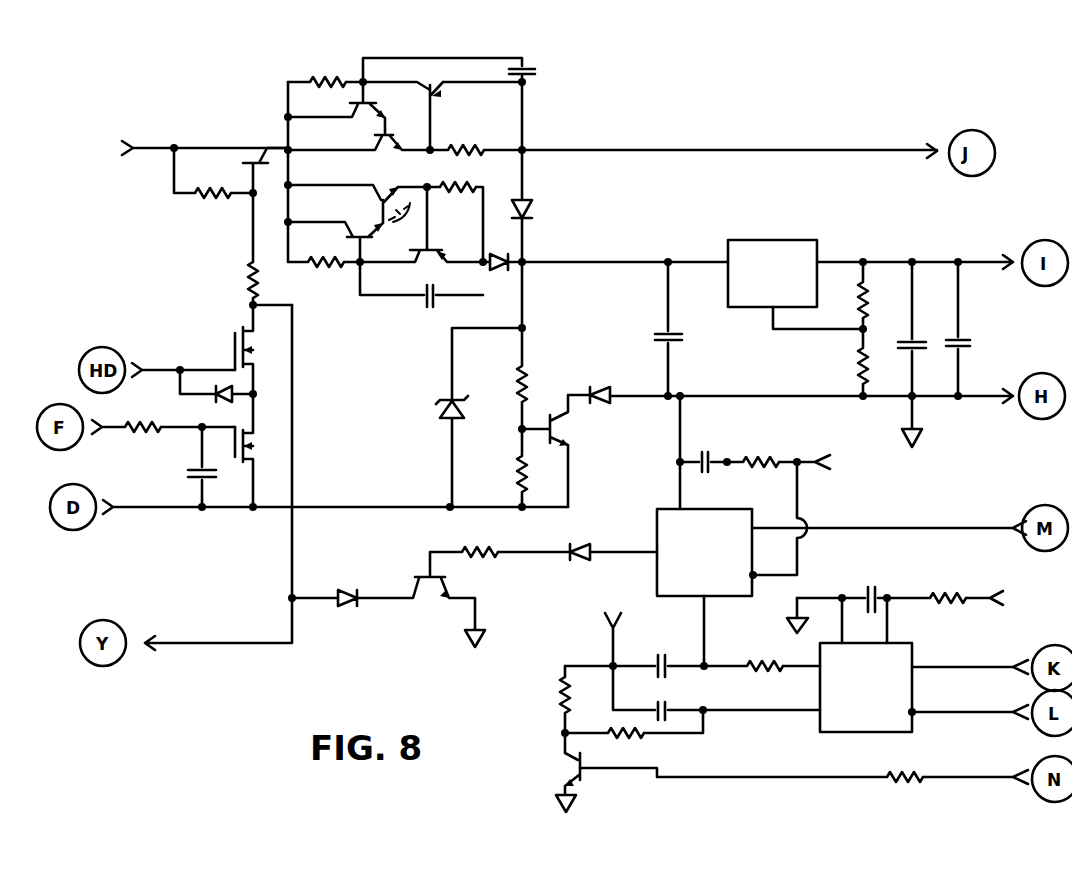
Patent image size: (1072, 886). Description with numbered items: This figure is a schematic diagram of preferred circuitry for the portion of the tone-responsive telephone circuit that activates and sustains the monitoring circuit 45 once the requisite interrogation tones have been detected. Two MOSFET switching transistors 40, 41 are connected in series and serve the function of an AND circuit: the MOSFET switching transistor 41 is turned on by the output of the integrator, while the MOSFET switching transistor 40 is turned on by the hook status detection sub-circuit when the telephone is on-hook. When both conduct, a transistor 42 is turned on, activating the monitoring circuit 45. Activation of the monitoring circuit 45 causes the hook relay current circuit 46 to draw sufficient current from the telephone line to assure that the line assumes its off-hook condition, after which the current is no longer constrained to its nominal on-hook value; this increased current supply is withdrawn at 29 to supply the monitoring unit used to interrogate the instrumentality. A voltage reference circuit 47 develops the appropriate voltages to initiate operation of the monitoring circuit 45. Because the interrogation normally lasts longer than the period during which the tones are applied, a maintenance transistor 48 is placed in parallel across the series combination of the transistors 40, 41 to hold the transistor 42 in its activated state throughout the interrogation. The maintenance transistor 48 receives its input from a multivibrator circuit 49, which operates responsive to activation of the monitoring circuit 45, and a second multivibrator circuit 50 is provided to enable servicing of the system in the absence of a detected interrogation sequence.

The increased current supply withdrawal point 29 is at (170, 148).
The transistor 42 is at (251, 154).
The hook relay current circuit 46 is at (492, 128).
The monitoring circuit 45 is at (711, 196).
The voltage reference circuit 47 is at (798, 252).
The MOSFET switching transistor 40 is at (258, 356).
The MOSFET switching transistor 41 is at (258, 451).
The maintenance transistor 48 is at (412, 588).
The multivibrator circuit 49 is at (719, 566).
The second multivibrator circuit 50 is at (874, 701).